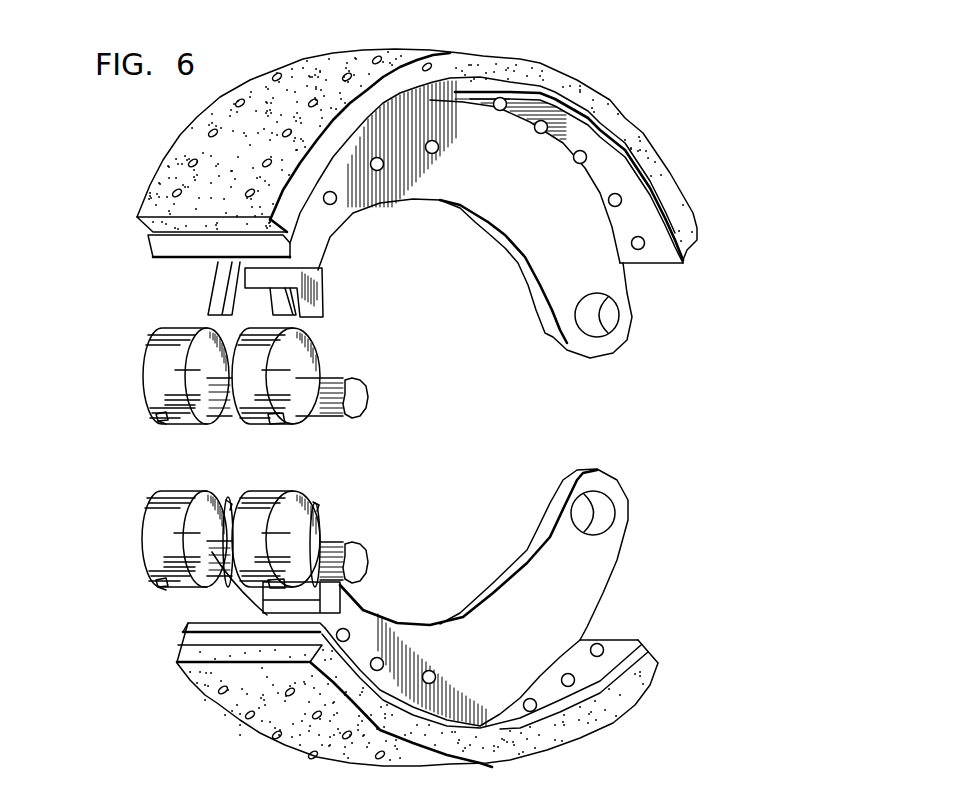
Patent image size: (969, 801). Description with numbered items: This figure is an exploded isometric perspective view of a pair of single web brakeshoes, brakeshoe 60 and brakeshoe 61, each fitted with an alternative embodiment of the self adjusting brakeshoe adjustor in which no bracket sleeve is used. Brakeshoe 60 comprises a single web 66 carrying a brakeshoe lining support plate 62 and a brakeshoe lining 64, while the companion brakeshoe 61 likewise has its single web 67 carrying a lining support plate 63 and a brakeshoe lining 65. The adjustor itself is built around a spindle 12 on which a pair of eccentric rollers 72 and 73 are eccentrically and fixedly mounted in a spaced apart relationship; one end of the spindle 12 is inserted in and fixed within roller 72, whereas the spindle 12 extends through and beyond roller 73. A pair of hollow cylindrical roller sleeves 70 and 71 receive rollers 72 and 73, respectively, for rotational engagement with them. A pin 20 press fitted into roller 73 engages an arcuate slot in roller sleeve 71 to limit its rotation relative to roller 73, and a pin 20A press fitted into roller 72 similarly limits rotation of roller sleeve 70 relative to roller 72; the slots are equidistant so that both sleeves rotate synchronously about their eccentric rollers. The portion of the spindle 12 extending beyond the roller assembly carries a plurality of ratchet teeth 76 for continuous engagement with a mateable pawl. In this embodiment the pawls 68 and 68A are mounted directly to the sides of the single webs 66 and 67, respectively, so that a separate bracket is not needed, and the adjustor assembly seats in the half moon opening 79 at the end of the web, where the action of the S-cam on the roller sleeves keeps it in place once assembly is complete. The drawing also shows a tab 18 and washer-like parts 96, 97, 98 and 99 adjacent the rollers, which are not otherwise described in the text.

The brakeshoe 60 is at (527, 43).
The brakeshoe 61 is at (608, 736).
The brakeshoe lining support plate 62 is at (163, 243).
The brakeshoe lining support plate 63 is at (622, 640).
The brakeshoe lining 64 is at (157, 193).
The brakeshoe lining 65 is at (640, 677).
The single web 66 is at (547, 263).
The single web 67 is at (553, 553).
The pawl 68 is at (320, 270).
The pawl 68A is at (345, 613).
The half moon opening 79 is at (278, 302).
The roller sleeve 70 is at (165, 327).
The roller sleeve 71 is at (268, 338).
The eccentric roller 72 is at (192, 363).
The eccentric roller 73 is at (302, 358).
The spindle 12 is at (210, 397).
The ratchet teeth 76 is at (352, 382).
The retaining tab 18 is at (155, 416).
The pin 20 is at (282, 423).
The pin 20A is at (163, 420).
The washer 96 is at (227, 505).
The washer tab 97 is at (232, 508).
The washer 98 is at (320, 520).
The washer tab 99 is at (322, 506).